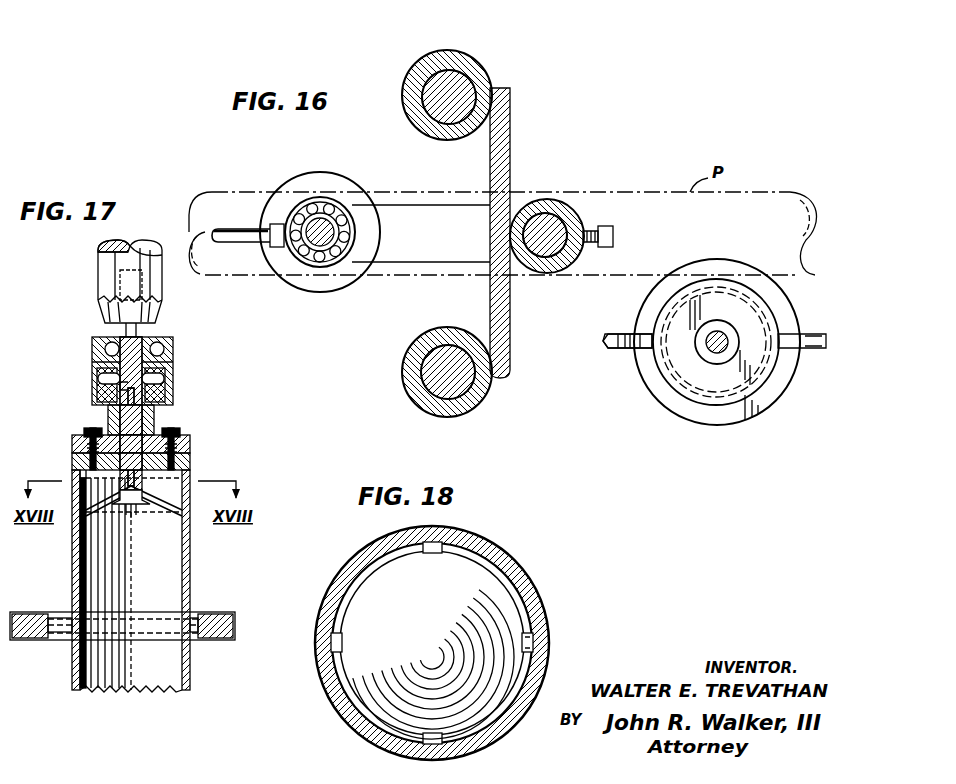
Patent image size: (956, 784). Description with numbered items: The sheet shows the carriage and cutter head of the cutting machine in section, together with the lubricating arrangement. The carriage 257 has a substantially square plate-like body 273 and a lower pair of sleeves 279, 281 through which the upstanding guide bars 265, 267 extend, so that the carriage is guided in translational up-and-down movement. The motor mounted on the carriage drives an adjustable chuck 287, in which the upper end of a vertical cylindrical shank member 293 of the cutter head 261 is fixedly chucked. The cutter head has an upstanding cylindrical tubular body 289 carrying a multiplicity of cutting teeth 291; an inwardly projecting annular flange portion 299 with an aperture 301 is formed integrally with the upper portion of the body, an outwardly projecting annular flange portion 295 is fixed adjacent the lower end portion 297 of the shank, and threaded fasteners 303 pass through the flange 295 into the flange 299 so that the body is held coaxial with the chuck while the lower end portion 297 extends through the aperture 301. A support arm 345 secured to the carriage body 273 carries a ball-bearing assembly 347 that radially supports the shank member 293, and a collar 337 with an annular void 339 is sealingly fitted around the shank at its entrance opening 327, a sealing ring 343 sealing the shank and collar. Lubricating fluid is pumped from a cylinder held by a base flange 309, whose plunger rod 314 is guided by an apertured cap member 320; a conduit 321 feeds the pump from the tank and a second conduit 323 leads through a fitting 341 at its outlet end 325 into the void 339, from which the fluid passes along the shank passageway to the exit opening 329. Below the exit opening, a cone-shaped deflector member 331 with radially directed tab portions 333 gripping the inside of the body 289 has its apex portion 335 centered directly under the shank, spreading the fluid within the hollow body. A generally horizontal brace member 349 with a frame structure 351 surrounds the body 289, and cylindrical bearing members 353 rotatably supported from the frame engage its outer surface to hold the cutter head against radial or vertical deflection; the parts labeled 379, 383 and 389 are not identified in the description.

In FIG. 16, the carriage 257 is at (517, 160).
In FIG. 17, the cutter head 261 is at (216, 680).
In FIG. 16, the guide bar 265 is at (430, 382).
In FIG. 16, the guide bar 267 is at (428, 93).
In FIG. 16, the plate-like body 273 is at (502, 178).
In FIG. 16, the sleeve 279 is at (413, 360).
In FIG. 16, the sleeve 281 is at (417, 75).
In FIG. 17, the adjustable chuck 287 is at (98, 280).
In FIG. 17, the cylindrical tubular body 289 is at (171, 585).
In FIG. 18, the cylindrical tubular body 289 is at (537, 606).
In FIG. 17, the cutting elements or teeth 291 is at (118, 690).
In FIG. 18, the cutting elements or teeth 291 is at (518, 570).
In FIG. 17, the shank member 293 is at (146, 337).
In FIG. 17, the annular flange portion 295 is at (73, 444).
In FIG. 17, the lower end portion 297 is at (191, 446).
In FIG. 17, the annular flange portion 299 is at (73, 465).
In FIG. 17, the aperture 301 is at (92, 500).
In FIG. 17, the threaded fasteners 303 is at (150, 427).
In FIG. 16, the base flange 309 is at (758, 412).
In FIG. 16, the plunger rod 314 is at (728, 336).
In FIG. 16, the cap member 320 is at (682, 368).
In FIG. 16, the conduit 321 is at (628, 343).
In FIG. 16, the second conduit 323 is at (236, 229).
In FIG. 16, the outlet end 325 is at (248, 228).
In FIG. 17, the outlet end 325 is at (118, 410).
In FIG. 17, the entrance opening 327 is at (100, 380).
In FIG. 17, the exit opening 329 is at (168, 480).
In FIG. 17, the cone-shaped deflector member 331 is at (147, 505).
In FIG. 18, the cone-shaped deflector member 331 is at (463, 573).
In FIG. 18, the tab portions 333 is at (438, 543).
In FIG. 18, the apex portion 335 is at (432, 640).
In FIG. 16, the collar 337 is at (318, 198).
In FIG. 17, the collar 337 is at (175, 366).
In FIG. 17, the annular void 339 is at (172, 386).
In FIG. 16, the fitting 341 is at (262, 225).
In FIG. 17, the sealing ring 343 is at (118, 402).
In FIG. 16, the support arm 345 is at (410, 215).
In FIG. 16, the ball-bearing assembly 347 is at (328, 210).
In FIG. 17, the ball-bearing assembly 347 is at (108, 340).
In FIG. 17, the brace member 349 is at (210, 622).
In FIG. 17, the frame structure 351 is at (230, 638).
In FIG. 17, the bearing members 353 is at (62, 617).
In FIG. 16, the roller 379 is at (543, 243).
In FIG. 16, the roller sleeve 383 is at (577, 215).
In FIG. 16, the nut 389 is at (614, 238).